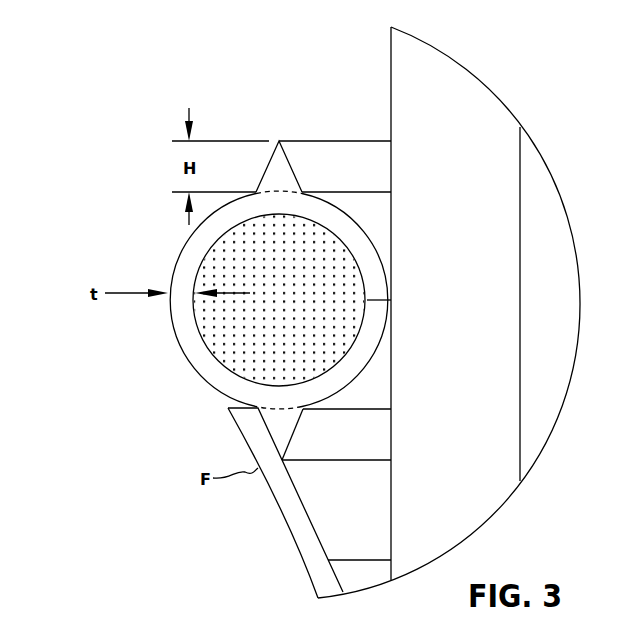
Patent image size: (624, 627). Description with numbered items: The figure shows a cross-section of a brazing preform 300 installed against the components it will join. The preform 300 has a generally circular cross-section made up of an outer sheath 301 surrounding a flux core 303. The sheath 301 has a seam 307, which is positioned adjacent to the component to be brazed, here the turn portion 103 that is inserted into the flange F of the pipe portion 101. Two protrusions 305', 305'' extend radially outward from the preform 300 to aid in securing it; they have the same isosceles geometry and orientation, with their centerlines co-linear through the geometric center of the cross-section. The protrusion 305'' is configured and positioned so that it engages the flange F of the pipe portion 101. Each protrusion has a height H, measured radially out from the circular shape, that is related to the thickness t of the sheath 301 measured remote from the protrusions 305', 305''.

The preform 300 is at (152, 148).
The sheath 301 is at (178, 270).
The flux core 303 is at (246, 343).
The protrusion 305' is at (288, 128).
The protrusion 305'' is at (226, 434).
The seam 307 is at (368, 300).
The turn portion 103 is at (458, 67).
The pipe portion 101 is at (290, 533).